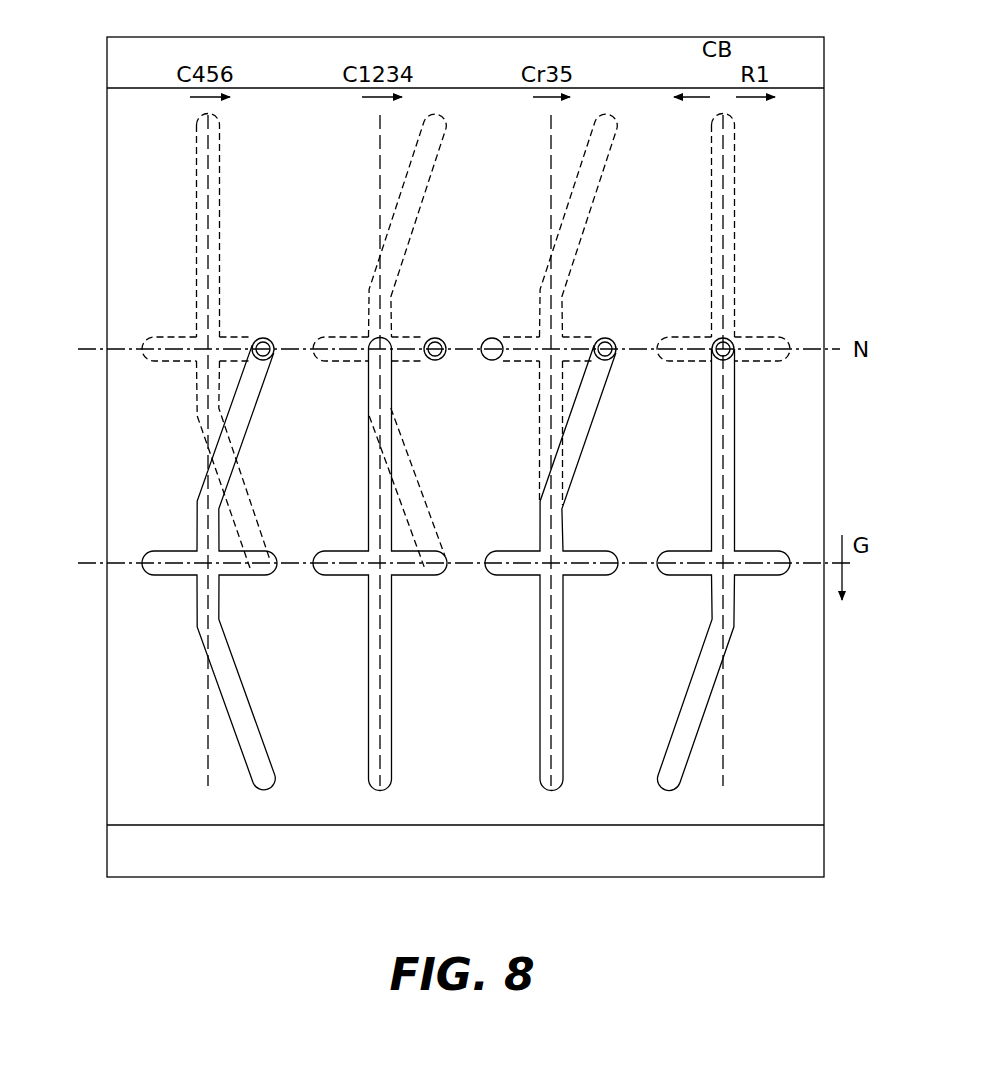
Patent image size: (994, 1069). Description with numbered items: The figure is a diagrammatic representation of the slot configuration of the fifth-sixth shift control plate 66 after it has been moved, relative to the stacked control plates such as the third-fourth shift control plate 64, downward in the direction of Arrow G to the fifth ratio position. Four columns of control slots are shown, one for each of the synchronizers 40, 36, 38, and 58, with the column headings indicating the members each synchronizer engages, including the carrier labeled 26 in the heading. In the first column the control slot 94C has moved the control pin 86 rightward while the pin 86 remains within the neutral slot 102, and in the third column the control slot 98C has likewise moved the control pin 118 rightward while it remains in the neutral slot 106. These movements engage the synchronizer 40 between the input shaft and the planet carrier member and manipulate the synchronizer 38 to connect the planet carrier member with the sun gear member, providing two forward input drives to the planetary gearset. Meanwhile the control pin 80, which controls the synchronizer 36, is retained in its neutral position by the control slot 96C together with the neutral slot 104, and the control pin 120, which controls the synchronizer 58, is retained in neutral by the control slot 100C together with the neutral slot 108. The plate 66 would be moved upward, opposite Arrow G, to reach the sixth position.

The synchronizer 40 is at (205, 398).
The synchronizer 36 is at (378, 398).
The synchronizer 38 is at (547, 398).
The synchronizer 58 is at (717, 398).
The crossbar cam 26 is at (692, 79).
The 3-4 shift control plate 64 is at (828, 100).
The 5-6 shift control plate 66 is at (105, 815).
The control pin 80 is at (445, 340).
The control pin 86 is at (278, 340).
The control slot 94C is at (246, 432).
The control slot 96C is at (393, 616).
The control slot 98C is at (602, 386).
The control slot 100C is at (694, 699).
The neutral slot portion 102 is at (171, 336).
The neutral slot portion 104 is at (418, 361).
The neutral slot portion 106 is at (508, 363).
The neutral slot portion 108 is at (769, 364).
The control pin 118 is at (618, 340).
The control pin 120 is at (731, 339).